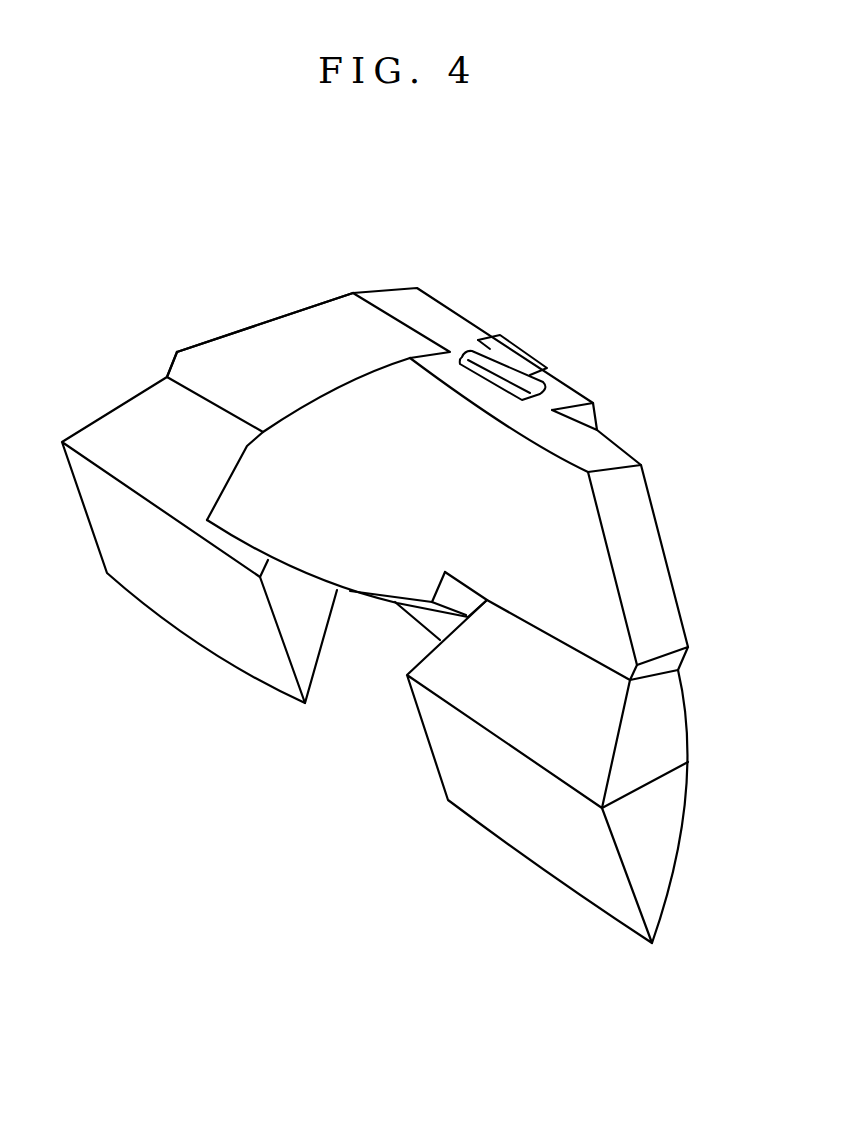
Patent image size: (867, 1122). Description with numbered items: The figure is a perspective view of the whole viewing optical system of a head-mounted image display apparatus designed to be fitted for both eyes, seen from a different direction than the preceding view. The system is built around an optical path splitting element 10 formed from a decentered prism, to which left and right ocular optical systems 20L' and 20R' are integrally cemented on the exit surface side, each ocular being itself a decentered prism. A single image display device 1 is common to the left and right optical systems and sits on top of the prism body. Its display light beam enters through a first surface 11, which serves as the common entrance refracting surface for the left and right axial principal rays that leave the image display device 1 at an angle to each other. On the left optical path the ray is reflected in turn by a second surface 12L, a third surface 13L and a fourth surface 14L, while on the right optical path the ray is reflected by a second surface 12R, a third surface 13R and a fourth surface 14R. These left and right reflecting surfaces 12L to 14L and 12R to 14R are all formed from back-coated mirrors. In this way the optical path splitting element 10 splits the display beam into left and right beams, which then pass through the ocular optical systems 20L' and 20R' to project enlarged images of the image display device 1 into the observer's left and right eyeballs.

The image display device 1 is at (518, 353).
The optical path splitting element 10 is at (583, 512).
The first surface 11 is at (530, 382).
The second surface 12L is at (423, 627).
The second surface 12R is at (322, 585).
The third surface 13L is at (596, 420).
The third surface 13R is at (323, 397).
The fourth surface 14L is at (296, 312).
The fourth surface 14R is at (653, 563).
The left ocular optical system 20L' is at (193, 521).
The right ocular optical system 20R' is at (601, 771).